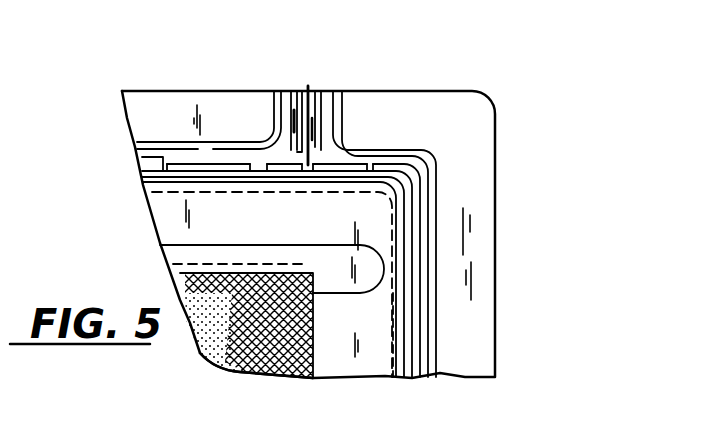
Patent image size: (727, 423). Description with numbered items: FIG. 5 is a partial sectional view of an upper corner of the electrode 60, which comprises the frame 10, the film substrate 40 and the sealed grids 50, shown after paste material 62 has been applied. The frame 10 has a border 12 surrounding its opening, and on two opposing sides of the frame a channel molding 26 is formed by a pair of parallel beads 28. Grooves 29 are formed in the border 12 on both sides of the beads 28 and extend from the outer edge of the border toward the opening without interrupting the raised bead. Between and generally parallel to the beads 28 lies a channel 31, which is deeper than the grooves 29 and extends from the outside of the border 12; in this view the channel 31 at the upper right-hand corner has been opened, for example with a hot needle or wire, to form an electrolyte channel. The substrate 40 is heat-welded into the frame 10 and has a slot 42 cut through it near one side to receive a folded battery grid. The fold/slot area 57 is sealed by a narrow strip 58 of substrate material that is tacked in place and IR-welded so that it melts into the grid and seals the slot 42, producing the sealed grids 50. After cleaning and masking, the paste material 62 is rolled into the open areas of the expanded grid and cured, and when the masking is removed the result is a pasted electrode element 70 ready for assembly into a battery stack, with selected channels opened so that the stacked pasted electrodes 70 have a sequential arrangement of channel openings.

The frame 10 is at (496, 131).
The border 12 is at (470, 220).
The channel molding 26 is at (338, 83).
The parallel bead 28 is at (358, 91).
The groove 29 is at (338, 126).
The channel 31 is at (310, 91).
The film substrate 40 is at (322, 228).
The slot 42 is at (217, 262).
The sealed grid 50 is at (313, 322).
The fold/slot area 57 is at (391, 262).
The sealing strip 58 is at (352, 270).
The electrode 60 is at (510, 298).
The paste material 62 is at (313, 378).
The pasted electrode element 70 is at (497, 358).